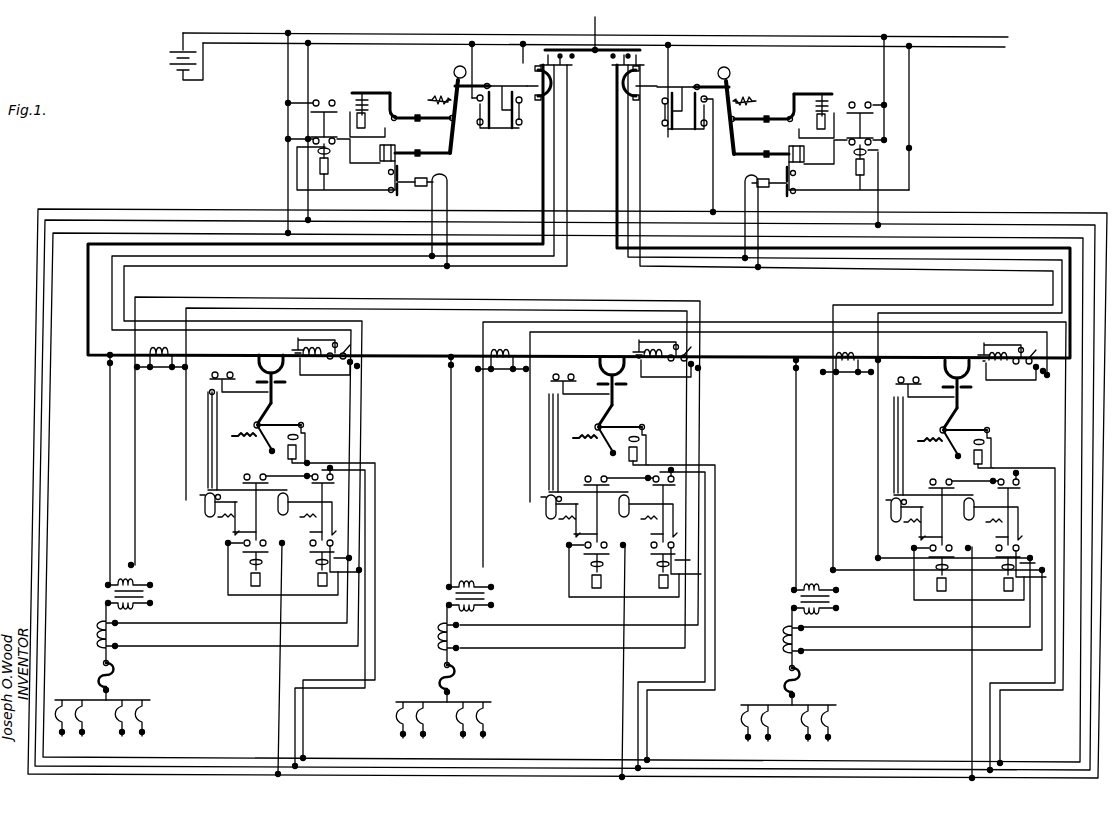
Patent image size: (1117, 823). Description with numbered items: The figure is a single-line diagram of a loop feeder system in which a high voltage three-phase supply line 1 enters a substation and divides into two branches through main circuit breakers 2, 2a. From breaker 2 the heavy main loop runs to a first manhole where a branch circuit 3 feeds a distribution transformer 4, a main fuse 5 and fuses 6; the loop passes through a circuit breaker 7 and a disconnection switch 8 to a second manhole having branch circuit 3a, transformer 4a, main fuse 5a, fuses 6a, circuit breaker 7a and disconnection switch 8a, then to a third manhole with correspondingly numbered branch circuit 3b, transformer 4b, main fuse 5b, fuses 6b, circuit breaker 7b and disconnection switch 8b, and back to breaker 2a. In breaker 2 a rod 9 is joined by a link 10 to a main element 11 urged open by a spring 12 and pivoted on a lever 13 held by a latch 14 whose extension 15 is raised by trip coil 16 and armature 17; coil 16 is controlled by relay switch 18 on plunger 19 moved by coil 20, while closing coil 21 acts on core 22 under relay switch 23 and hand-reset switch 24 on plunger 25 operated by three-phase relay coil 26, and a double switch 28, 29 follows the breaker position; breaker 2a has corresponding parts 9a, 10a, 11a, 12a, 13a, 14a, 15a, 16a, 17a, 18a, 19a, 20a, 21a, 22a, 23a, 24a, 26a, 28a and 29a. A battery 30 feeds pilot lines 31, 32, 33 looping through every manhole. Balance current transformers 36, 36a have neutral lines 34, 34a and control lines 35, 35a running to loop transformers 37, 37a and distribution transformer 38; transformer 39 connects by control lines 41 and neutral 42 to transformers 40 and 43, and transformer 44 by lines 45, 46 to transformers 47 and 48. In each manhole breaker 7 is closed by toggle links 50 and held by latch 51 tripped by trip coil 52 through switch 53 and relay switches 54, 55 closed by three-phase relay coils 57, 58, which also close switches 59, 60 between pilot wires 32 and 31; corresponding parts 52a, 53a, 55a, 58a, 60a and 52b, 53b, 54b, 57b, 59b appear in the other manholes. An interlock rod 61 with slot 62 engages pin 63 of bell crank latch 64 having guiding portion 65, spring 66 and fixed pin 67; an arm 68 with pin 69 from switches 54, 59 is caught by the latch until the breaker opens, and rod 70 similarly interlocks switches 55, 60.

The supply line 1 is at (597, 30).
The main circuit breaker 2 is at (548, 86).
The main circuit breaker 2a is at (636, 86).
The branch circuit 3 is at (108, 413).
The branch circuit 3a is at (437, 471).
The line conductor 3b is at (777, 474).
The distribution transformer 4 is at (104, 593).
The distribution transformer 4a is at (456, 596).
The distribution transformer 4b is at (798, 599).
The main fuse 5 is at (100, 671).
The main fuse 5a is at (434, 683).
The choke coil 5b is at (776, 686).
The fuses 6 is at (148, 728).
The fuses 6a is at (461, 720).
The lamp contacts 6b is at (787, 723).
The circuit breaker 7 is at (266, 368).
The circuit breaker 7a is at (602, 371).
The circuit breaker 7b is at (948, 373).
The disconnection switch 8 is at (346, 360).
The disconnection switch 8a is at (676, 350).
The contact 8b is at (1021, 351).
The rod 9 is at (503, 85).
The link 9a is at (694, 86).
The link 10 is at (466, 82).
The lever bar 10a is at (722, 70).
The main element 11 is at (455, 85).
The lever 11a is at (733, 100).
The spring 12 is at (436, 96).
The spring 12a is at (762, 98).
The lever 13 is at (414, 114).
The bar 13a is at (766, 116).
The latch 14 is at (392, 100).
The arm 14a is at (802, 90).
The extension 15 is at (382, 90).
The bar 15a is at (830, 90).
The trip coil 16 is at (362, 96).
The coil 16a is at (830, 102).
The plunger 17 is at (366, 118).
The resistance 17a is at (818, 122).
The relay switch 18 is at (324, 101).
The contact 18a is at (868, 101).
The plunger 19 is at (318, 165).
The resistance 19a is at (850, 187).
The relay coil 20 is at (330, 150).
The coil 20a is at (870, 152).
The closing coil 21 is at (382, 170).
The magnet coil 21a is at (804, 152).
The core 22 is at (418, 150).
The bar 22a is at (795, 162).
The relay switch 23 is at (333, 136).
The contact 23a is at (875, 138).
The relay switch 24 is at (400, 180).
The contact 24a is at (796, 190).
The plunger 25 is at (430, 178).
The relay coil 26 is at (448, 184).
The tube 26a is at (745, 182).
The switch 28 is at (478, 106).
The switch 28a is at (700, 130).
The switch 29 is at (518, 106).
The contact 29a is at (666, 108).
The battery 30 is at (172, 66).
The pilot line 31 is at (200, 220).
The pilot line 32 is at (170, 198).
The pilot line 33 is at (260, 233).
The neutral line 34 is at (410, 258).
The neutral line 34a is at (778, 262).
The three-phase control lines 35 is at (506, 267).
The three-phase control lines 35a is at (868, 268).
The current transformer windings 36 is at (553, 50).
The current transformer windings 36a is at (640, 50).
The balanced current transformer 37 is at (312, 366).
The current transformer 37a is at (847, 376).
The current transformer 38 is at (98, 629).
The balance current transformer 39 is at (162, 369).
The current transformer 40 is at (671, 378).
The three-phase control lines 41 is at (236, 300).
The neutral line 42 is at (274, 310).
The current transformer 43 is at (430, 635).
The current transformer 44 is at (502, 374).
The three-phase control lines 45 is at (516, 325).
The neutral line 46 is at (562, 333).
The current transformer 47 is at (1016, 383).
The current transformer 48 is at (772, 638).
The toggle links 50 is at (262, 410).
The latch 51 is at (277, 424).
The trip coil 52 is at (297, 437).
The magnet 52a is at (650, 446).
The magnet 52b is at (998, 449).
The switch 53 is at (218, 372).
The contact 53a is at (551, 433).
The contact 53b is at (918, 416).
The relay switch 54 is at (262, 550).
The contact 54b is at (946, 580).
The relay switch 55 is at (316, 550).
The contact 55a is at (701, 554).
The relay coil 57 is at (265, 576).
The resistance 57b is at (912, 579).
The relay coil 58 is at (310, 576).
The resistance 58a is at (647, 577).
The switch 59 is at (244, 477).
The contact 59b is at (954, 498).
The switch 60 is at (328, 481).
The contact 60a is at (668, 505).
The rod 61 is at (212, 416).
The slot 62 is at (205, 509).
The pin 63 is at (210, 499).
The bell crank 64 is at (218, 493).
The guiding portion 65 is at (226, 547).
The spring 66 is at (218, 520).
The fixed pin 67 is at (205, 495).
The arm 68 is at (232, 518).
The pin 69 is at (228, 533).
The rod 70 is at (226, 490).